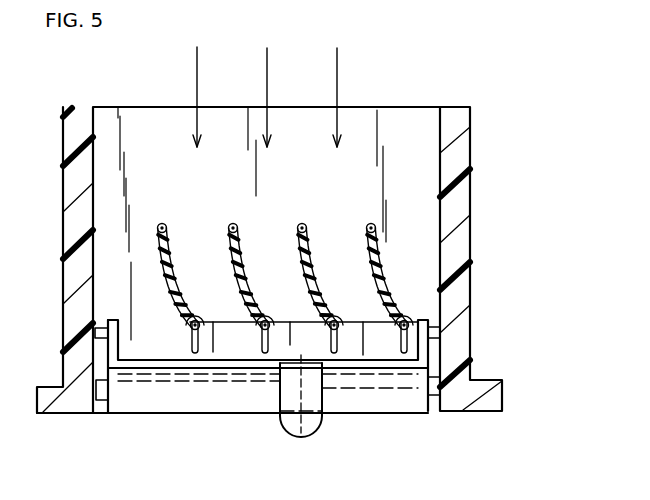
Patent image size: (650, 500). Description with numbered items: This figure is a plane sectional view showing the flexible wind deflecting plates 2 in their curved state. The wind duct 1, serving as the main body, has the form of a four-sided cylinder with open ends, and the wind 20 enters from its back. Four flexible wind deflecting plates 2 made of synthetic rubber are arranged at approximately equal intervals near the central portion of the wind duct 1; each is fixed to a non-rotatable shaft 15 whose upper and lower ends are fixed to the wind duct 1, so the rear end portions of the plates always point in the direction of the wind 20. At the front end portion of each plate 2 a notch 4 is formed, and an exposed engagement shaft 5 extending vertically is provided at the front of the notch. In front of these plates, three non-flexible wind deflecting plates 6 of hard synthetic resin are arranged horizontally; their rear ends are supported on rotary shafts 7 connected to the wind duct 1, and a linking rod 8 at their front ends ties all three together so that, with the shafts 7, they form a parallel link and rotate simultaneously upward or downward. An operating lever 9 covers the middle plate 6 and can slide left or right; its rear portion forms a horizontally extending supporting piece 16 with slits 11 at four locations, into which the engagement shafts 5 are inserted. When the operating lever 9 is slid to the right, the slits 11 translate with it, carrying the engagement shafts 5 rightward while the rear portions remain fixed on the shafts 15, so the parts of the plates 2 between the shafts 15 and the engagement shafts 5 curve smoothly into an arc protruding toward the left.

The wind duct 1 is at (470, 208).
The flexible wind deflecting plate 2 is at (172, 255).
The notch 4 is at (189, 323).
The engagement shaft 5 is at (199, 321).
The non-flexible wind deflecting plate 6 is at (385, 400).
The rotary shaft 7 is at (435, 330).
The linking rod 8 is at (434, 396).
The operating lever 9 is at (316, 431).
The slit 11 is at (191, 342).
The non-rotatable shaft 15 is at (166, 224).
The supporting piece 16 is at (280, 378).
The wind 20 is at (197, 67).